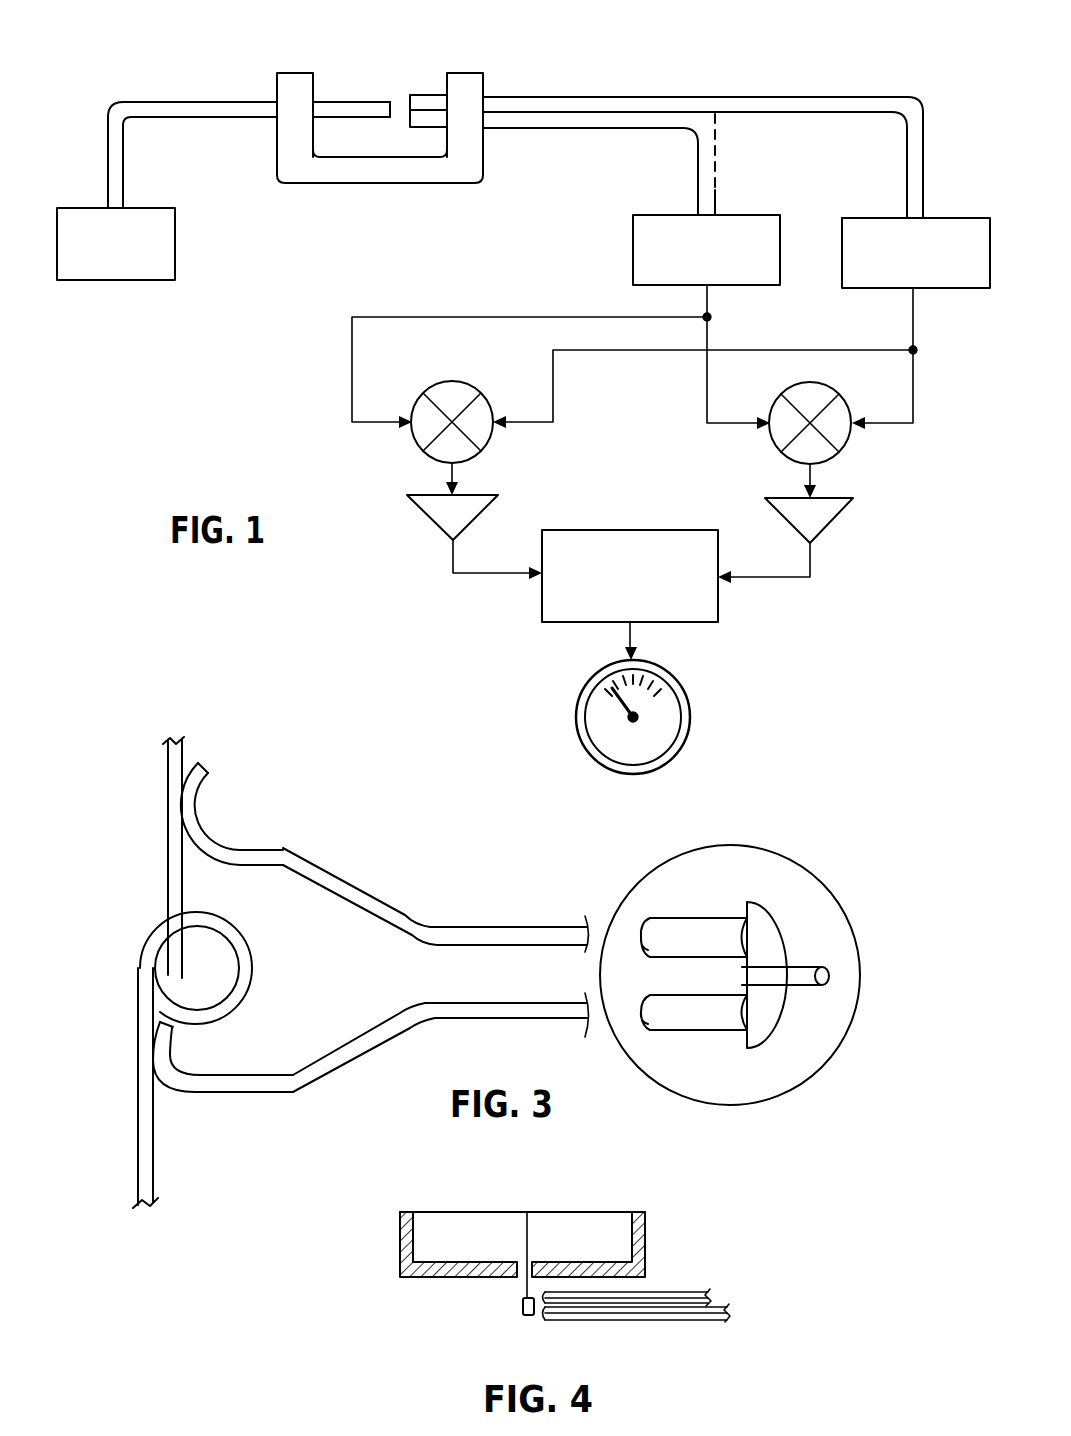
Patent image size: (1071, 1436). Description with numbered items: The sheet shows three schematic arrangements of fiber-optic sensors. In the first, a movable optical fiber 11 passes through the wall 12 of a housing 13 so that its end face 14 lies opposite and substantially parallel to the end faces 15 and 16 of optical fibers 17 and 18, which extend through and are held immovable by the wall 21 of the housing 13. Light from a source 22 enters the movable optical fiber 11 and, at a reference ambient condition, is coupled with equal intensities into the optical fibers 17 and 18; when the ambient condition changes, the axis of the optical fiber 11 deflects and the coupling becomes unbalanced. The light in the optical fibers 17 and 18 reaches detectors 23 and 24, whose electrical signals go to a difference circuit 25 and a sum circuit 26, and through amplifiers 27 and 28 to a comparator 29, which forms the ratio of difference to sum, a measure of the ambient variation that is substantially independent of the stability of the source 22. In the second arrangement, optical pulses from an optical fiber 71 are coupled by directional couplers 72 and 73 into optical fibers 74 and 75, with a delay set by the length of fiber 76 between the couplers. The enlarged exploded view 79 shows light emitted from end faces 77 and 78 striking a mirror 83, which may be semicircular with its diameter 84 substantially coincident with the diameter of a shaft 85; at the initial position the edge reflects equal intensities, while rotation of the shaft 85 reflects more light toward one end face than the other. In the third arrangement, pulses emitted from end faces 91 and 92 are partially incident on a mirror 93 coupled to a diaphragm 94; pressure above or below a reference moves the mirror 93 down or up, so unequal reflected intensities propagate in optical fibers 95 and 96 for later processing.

In FIG. 1, the movable optical fiber 11 is at (331, 102).
In FIG. 1, the wall 12 is at (290, 73).
In FIG. 1, the housing 13 is at (328, 196).
In FIG. 1, the end face 14 is at (397, 110).
In FIG. 1, the end face 15 is at (403, 100).
In FIG. 1, the end face 16 is at (407, 122).
In FIG. 1, the optical fiber 17 is at (532, 95).
In FIG. 1, the optical fiber 18 is at (525, 128).
In FIG. 1, the wall 21 is at (467, 73).
In FIG. 1, the source 22 is at (107, 281).
In FIG. 1, the detector 23 is at (952, 217).
In FIG. 1, the detector 24 is at (633, 245).
In FIG. 1, the difference circuit 25 is at (848, 438).
In FIG. 1, the sum circuit 26 is at (435, 383).
In FIG. 1, the amplifier 27 is at (428, 520).
In FIG. 1, the amplifier 28 is at (840, 517).
In FIG. 1, the comparator 29 is at (627, 530).
In FIG. 3, the optical fiber 71 is at (153, 1185).
In FIG. 3, the directional coupler 72 is at (173, 1052).
In FIG. 3, the directional coupler 73 is at (198, 800).
In FIG. 3, the optical fiber 74 is at (353, 1057).
In FIG. 3, the optical fiber 75 is at (407, 918).
In FIG. 3, the fiber 76 is at (253, 965).
In FIG. 3, the end face 77 is at (743, 1030).
In FIG. 3, the end face 78 is at (743, 930).
In FIG. 3, the exploded view 79 is at (761, 881).
In FIG. 3, the mirror 83 is at (767, 1027).
In FIG. 3, the diameter 84 is at (747, 940).
In FIG. 3, the shaft 85 is at (808, 965).
In FIG. 4, the end face 91 is at (525, 1297).
In FIG. 4, the end face 92 is at (543, 1317).
In FIG. 4, the mirror 93 is at (526, 1310).
In FIG. 4, the diaphragm 94 is at (492, 1212).
In FIG. 4, the optical fiber 95 is at (677, 1292).
In FIG. 4, the optical fiber 96 is at (670, 1322).